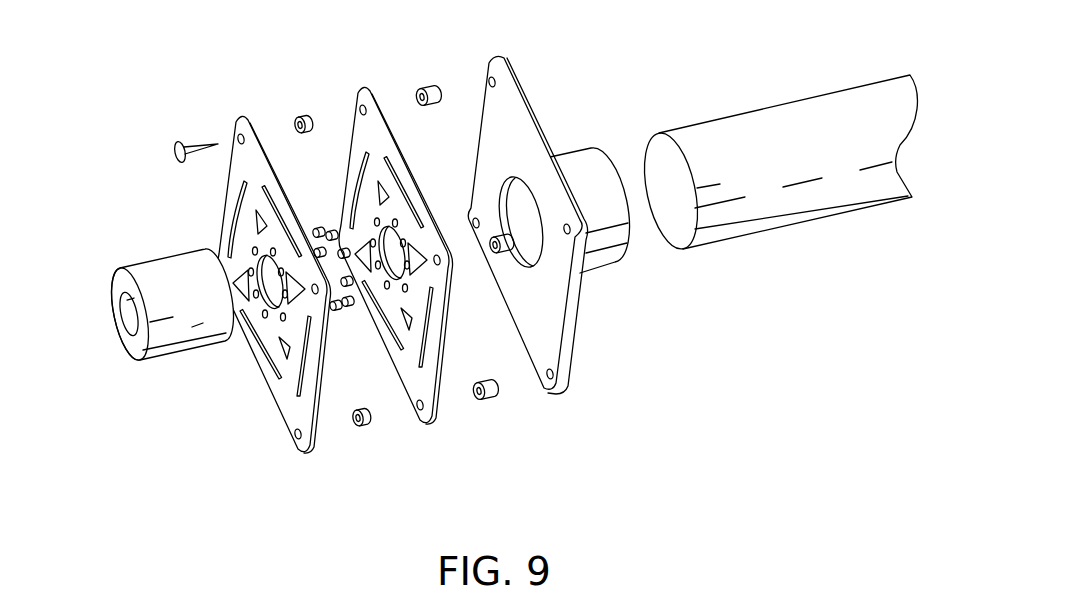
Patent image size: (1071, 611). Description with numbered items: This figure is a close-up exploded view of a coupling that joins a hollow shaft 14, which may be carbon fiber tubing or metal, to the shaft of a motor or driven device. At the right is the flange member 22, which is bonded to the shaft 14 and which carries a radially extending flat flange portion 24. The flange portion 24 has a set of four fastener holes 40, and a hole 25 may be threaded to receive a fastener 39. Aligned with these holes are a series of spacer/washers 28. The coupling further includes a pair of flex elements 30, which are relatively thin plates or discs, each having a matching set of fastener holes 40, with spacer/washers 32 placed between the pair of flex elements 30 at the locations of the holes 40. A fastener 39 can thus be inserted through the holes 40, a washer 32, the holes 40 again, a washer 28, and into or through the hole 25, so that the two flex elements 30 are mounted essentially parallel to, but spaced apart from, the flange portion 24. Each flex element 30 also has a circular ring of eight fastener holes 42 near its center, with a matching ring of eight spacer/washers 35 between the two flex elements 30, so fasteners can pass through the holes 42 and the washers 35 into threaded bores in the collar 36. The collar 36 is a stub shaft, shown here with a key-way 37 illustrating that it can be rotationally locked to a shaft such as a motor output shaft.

The shaft 14 is at (781, 118).
The flange member 22 is at (580, 100).
The flange portion 24 is at (575, 337).
The hole 25 is at (489, 80).
The spacer/washer 28 is at (421, 92).
The flex element 30 is at (284, 200).
The spacer/washer 32 is at (299, 119).
The spacer/washer 35 is at (345, 310).
The collar 36 is at (139, 348).
The key-way 37 is at (127, 305).
The fastener 39 is at (197, 144).
The fastener hole 40 is at (240, 137).
The fastener hole 42 is at (372, 222).